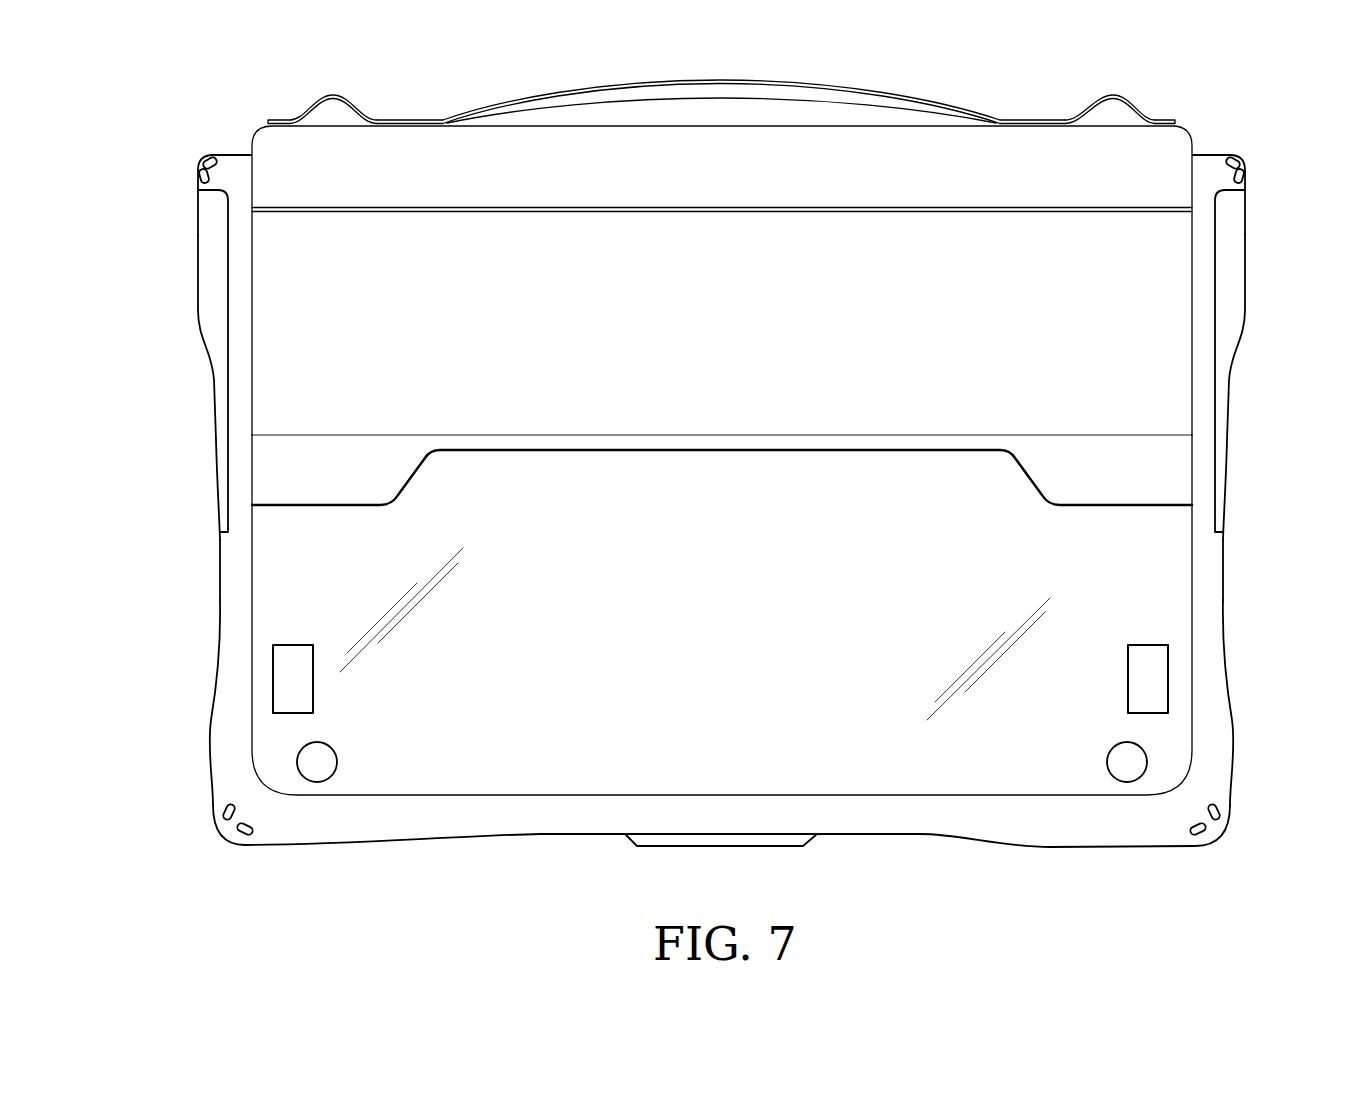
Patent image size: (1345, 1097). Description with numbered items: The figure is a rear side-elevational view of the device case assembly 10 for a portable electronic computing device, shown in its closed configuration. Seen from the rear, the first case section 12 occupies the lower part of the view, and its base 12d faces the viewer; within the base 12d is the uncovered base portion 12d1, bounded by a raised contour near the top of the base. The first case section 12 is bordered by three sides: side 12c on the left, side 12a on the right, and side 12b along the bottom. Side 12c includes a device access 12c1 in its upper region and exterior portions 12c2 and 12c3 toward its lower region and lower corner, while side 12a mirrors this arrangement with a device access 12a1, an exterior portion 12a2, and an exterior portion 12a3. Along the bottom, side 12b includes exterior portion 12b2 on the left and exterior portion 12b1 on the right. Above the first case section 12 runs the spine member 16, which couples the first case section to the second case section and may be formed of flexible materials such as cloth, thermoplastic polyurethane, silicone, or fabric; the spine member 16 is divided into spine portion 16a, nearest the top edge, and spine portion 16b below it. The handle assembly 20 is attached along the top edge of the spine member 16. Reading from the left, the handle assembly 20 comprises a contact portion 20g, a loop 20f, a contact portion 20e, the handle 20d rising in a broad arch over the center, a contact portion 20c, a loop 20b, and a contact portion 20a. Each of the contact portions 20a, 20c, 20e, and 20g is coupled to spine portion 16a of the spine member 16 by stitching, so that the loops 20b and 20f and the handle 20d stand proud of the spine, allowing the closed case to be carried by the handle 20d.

The device case assembly 10 is at (1250, 90).
The first case section 12 is at (719, 546).
The side 12a is at (1265, 513).
The device access 12a1 is at (1230, 385).
The exterior portion 12a2 is at (1232, 768).
The exterior portion 12a3 is at (1215, 833).
The side 12b is at (720, 886).
The exterior portion 12b1 is at (1086, 847).
The exterior portion 12b2 is at (300, 846).
The side 12c is at (175, 512).
The device access 12c1 is at (213, 397).
The exterior portion 12c2 is at (212, 722).
The exterior portion 12c3 is at (224, 833).
The base 12d is at (722, 615).
The uncovered base portion 12d1 is at (754, 530).
The spine member 16 is at (769, 276).
The spine portion 16a is at (746, 176).
The spine portion 16b is at (746, 326).
The handle assembly 20 is at (716, 82).
The contact portion 20a is at (1171, 120).
The loop 20b is at (1113, 94).
The contact portion 20c is at (1035, 120).
The handle 20d is at (657, 80).
The contact portion 20e is at (412, 120).
The loop 20f is at (332, 94).
The contact portion 20g is at (270, 120).